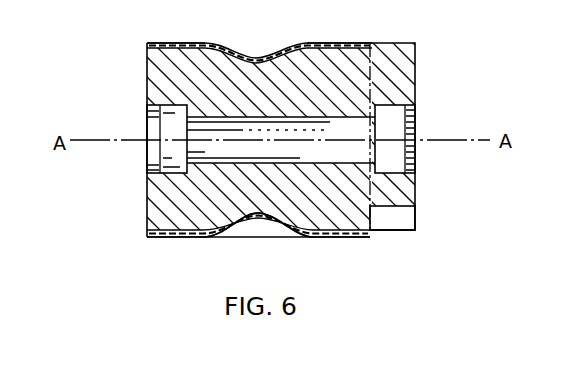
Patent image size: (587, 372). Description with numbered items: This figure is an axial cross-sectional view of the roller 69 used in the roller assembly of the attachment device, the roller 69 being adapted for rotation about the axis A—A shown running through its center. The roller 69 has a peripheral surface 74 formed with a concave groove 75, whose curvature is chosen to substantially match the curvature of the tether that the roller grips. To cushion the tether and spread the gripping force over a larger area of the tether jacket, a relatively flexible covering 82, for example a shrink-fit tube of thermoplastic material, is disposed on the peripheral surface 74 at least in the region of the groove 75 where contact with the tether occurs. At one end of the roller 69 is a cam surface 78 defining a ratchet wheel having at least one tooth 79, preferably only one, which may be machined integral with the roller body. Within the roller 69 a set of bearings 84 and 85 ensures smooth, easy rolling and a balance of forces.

The roller 69 is at (122, 250).
The peripheral surface 74 is at (190, 237).
The concave groove 75 is at (248, 218).
The cam surface 78 is at (403, 206).
The tooth 79 is at (396, 231).
The flexible covering 82 is at (327, 43).
The bearing 84 is at (172, 130).
The bearing 85 is at (417, 128).